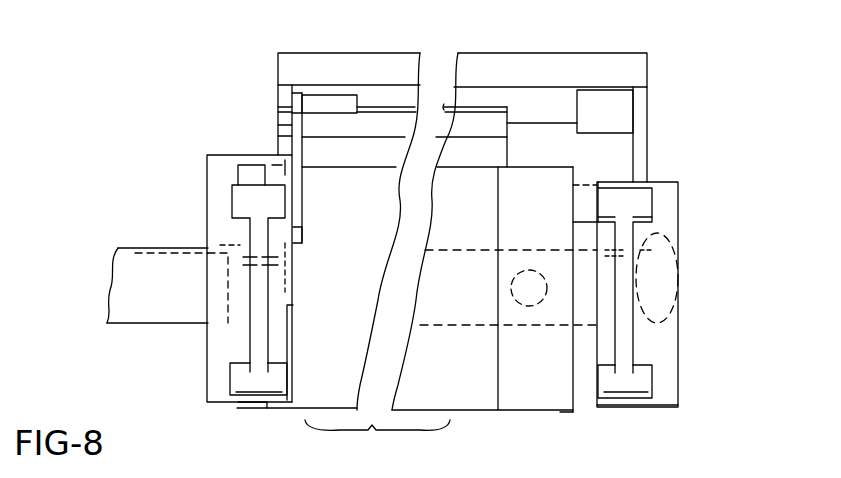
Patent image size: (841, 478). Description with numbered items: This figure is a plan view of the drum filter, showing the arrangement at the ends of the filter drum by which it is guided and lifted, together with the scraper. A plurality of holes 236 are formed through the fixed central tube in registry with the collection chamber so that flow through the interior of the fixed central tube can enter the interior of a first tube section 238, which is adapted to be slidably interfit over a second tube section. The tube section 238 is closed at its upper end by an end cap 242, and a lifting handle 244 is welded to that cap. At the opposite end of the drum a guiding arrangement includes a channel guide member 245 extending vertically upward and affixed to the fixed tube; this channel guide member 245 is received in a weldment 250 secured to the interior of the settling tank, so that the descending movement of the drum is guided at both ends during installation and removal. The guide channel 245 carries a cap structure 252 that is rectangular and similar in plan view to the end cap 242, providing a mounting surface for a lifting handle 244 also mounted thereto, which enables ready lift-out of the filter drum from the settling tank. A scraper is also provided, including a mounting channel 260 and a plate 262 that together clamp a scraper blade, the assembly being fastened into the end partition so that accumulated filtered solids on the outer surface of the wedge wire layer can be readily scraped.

The holes 236 is at (457, 257).
The first tube section 238 is at (650, 268).
The end cap 242 is at (213, 373).
The lifting handle 244 is at (255, 388).
The channel guide member 245 is at (227, 243).
The weldment 250 is at (162, 219).
The cap structure 252 is at (663, 395).
The mounting channel 260 is at (637, 78).
The plate 262 is at (472, 120).